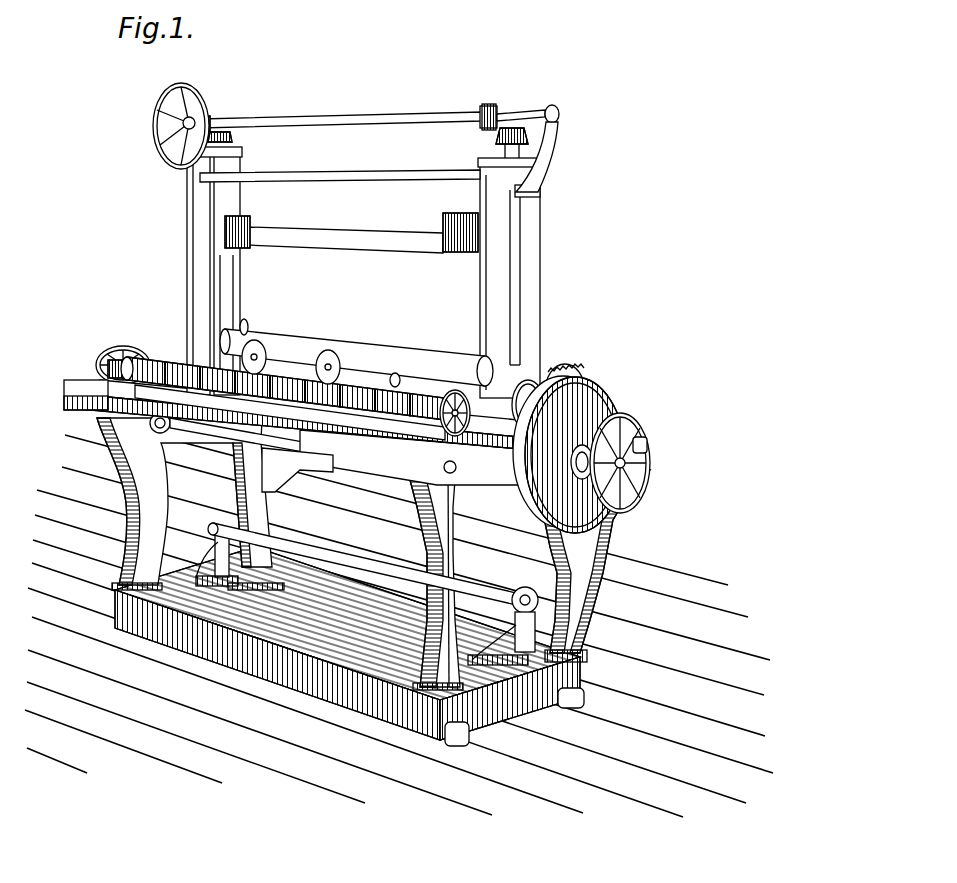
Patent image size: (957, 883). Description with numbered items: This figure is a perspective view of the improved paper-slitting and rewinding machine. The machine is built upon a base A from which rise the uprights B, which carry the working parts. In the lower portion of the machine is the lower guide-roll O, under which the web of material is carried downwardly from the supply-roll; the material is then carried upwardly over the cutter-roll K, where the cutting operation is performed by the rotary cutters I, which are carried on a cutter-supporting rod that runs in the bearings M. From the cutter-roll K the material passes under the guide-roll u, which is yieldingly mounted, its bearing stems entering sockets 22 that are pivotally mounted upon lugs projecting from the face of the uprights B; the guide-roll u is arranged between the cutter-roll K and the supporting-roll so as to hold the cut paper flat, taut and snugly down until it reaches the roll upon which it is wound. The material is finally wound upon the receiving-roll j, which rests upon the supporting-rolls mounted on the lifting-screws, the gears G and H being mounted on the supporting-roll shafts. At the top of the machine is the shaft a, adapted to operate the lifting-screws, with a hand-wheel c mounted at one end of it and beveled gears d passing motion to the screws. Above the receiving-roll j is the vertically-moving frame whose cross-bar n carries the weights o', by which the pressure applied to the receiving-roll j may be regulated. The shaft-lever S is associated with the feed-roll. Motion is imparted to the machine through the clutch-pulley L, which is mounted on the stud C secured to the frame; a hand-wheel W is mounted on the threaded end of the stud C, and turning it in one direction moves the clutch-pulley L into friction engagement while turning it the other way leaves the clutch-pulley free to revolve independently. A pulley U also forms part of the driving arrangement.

The base A is at (340, 579).
The uprights B is at (363, 265).
The stud C is at (581, 566).
The gear G is at (533, 380).
The gear H is at (568, 370).
The rotary cutters I is at (330, 347).
The cutter-roll K is at (283, 388).
The clutch-pulley L is at (632, 380).
The bearings of cutter-supporting rod M is at (125, 348).
The lower guide-roll O is at (392, 563).
The shaft-lever for the feed-roll S is at (240, 323).
The pulley U is at (110, 352).
The hand-wheel W is at (647, 452).
The shaft a is at (353, 119).
The hand-wheel c is at (204, 104).
The beveled gears d is at (212, 118).
The bevel gear e is at (232, 137).
The receiving-roll j is at (440, 376).
The cross-bar n is at (345, 240).
The weights o' is at (351, 225).
The guide-roll u is at (395, 376).
The sockets 22 is at (133, 342).